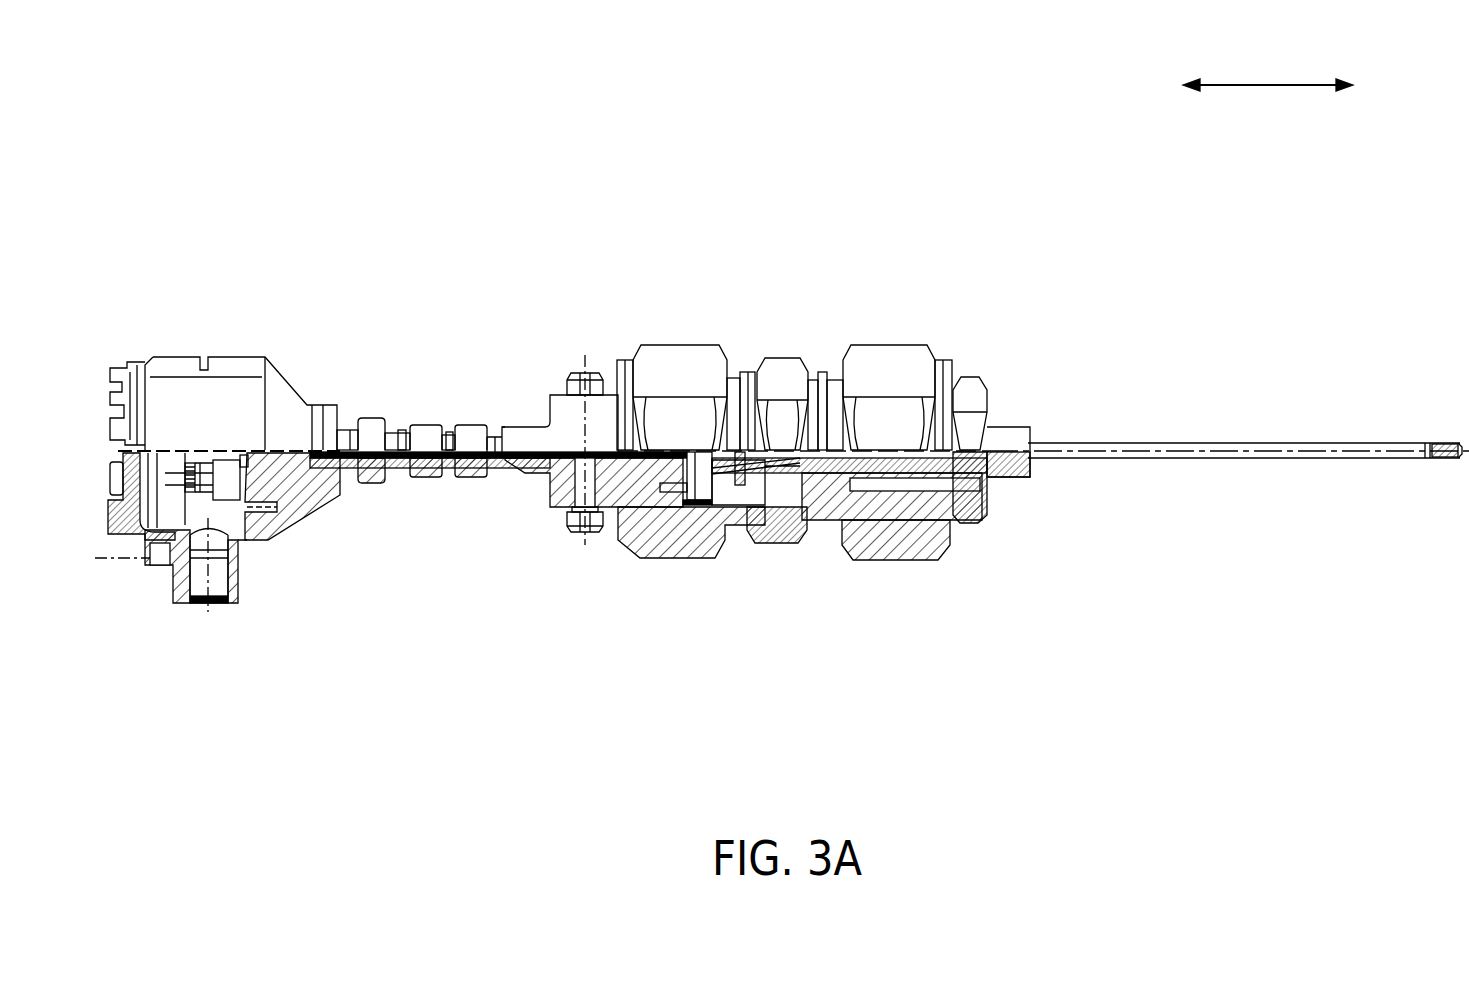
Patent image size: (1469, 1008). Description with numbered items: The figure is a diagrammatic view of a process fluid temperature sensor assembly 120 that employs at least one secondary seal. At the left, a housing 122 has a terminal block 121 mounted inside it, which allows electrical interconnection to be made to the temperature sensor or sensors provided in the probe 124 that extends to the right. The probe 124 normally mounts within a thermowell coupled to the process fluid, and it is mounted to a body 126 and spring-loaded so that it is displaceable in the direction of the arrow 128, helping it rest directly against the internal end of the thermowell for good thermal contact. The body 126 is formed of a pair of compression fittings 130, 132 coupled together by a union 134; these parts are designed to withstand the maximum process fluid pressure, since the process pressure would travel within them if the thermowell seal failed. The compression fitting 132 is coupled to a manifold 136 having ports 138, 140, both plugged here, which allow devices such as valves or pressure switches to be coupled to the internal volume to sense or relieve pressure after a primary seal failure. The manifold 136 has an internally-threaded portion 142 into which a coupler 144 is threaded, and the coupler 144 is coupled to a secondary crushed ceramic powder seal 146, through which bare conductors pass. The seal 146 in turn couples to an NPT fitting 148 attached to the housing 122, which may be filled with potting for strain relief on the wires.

The temperature sensor assembly 120 is at (782, 336).
The terminal block 121 is at (227, 493).
The housing 122 is at (272, 362).
The probe 124 is at (1313, 442).
The body 126 is at (968, 377).
The arrow 128 is at (1312, 84).
The compression fitting 130 is at (866, 345).
The compression fitting 132 is at (662, 345).
The union 134 is at (773, 357).
The manifold 136 is at (548, 410).
The port 138 is at (566, 385).
The port 140 is at (567, 512).
The internally-threaded portion 142 is at (513, 427).
The coupler 144 is at (470, 423).
The crushed ceramic powder seal 146 is at (430, 470).
The NPT fitting 148 is at (370, 418).